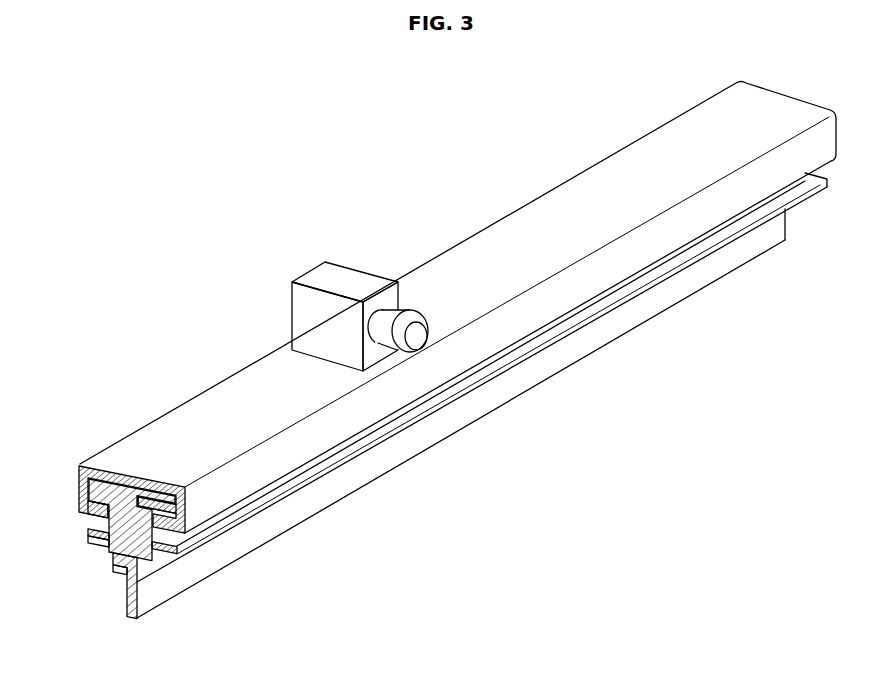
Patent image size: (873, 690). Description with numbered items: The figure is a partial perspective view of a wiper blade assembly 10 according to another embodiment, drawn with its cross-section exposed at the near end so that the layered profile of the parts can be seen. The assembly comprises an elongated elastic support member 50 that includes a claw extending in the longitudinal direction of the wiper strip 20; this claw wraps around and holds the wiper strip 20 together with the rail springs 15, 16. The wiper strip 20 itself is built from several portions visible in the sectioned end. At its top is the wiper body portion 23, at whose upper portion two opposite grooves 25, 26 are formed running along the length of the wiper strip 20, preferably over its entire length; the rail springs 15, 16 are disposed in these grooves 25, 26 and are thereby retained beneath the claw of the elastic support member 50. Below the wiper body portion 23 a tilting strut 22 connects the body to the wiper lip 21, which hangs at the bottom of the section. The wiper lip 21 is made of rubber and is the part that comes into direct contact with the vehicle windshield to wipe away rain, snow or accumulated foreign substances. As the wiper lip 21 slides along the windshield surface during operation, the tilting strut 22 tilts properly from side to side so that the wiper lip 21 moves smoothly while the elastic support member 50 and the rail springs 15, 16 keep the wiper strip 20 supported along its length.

The wiper blade assembly 10 is at (445, 208).
The elastic support member 50 is at (172, 413).
The wiper strip 20 is at (401, 480).
The wiper lip 21 is at (186, 587).
The rail spring 15 is at (79, 486).
The groove 25 is at (82, 466).
The groove 26 is at (158, 495).
The rail spring 16 is at (187, 507).
The wiper body portion 23 is at (90, 538).
The tilting strut 22 is at (127, 572).